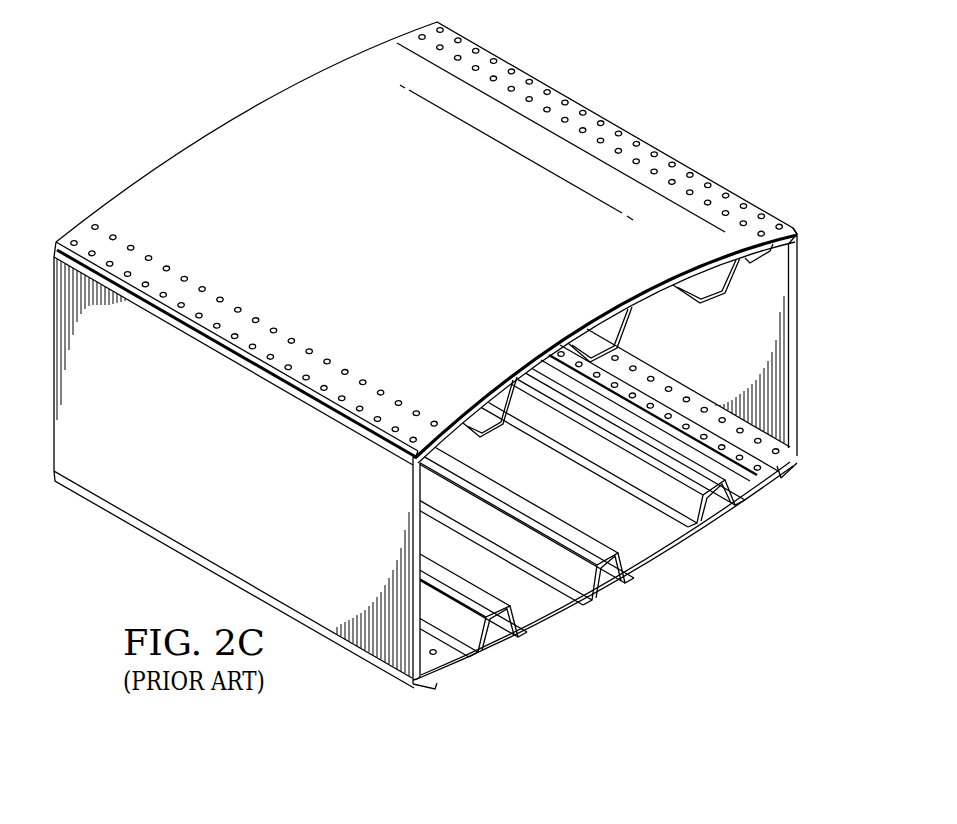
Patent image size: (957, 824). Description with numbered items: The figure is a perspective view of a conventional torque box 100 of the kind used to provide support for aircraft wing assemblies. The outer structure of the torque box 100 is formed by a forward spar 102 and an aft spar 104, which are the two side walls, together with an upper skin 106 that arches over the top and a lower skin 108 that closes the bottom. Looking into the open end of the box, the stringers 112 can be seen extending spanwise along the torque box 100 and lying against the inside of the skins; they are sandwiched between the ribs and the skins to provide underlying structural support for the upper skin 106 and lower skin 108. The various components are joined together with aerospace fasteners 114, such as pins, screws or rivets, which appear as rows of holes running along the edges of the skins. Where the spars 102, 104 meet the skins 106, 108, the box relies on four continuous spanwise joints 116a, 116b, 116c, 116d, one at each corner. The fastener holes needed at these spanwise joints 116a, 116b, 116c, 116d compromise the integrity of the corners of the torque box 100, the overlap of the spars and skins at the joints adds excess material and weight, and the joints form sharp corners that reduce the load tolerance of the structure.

The torque box 100 is at (146, 63).
The forward spar 102 is at (165, 507).
The aft spar 104 is at (800, 337).
The upper skin 106 is at (278, 107).
The lower skin 108 is at (563, 625).
The stringers 112 is at (595, 548).
The aerospace fasteners 114 is at (637, 158).
The spanwise joint 116a is at (448, 702).
The spanwise joint 116b is at (421, 443).
The spanwise joint 116c is at (768, 233).
The spanwise joint 116d is at (777, 477).